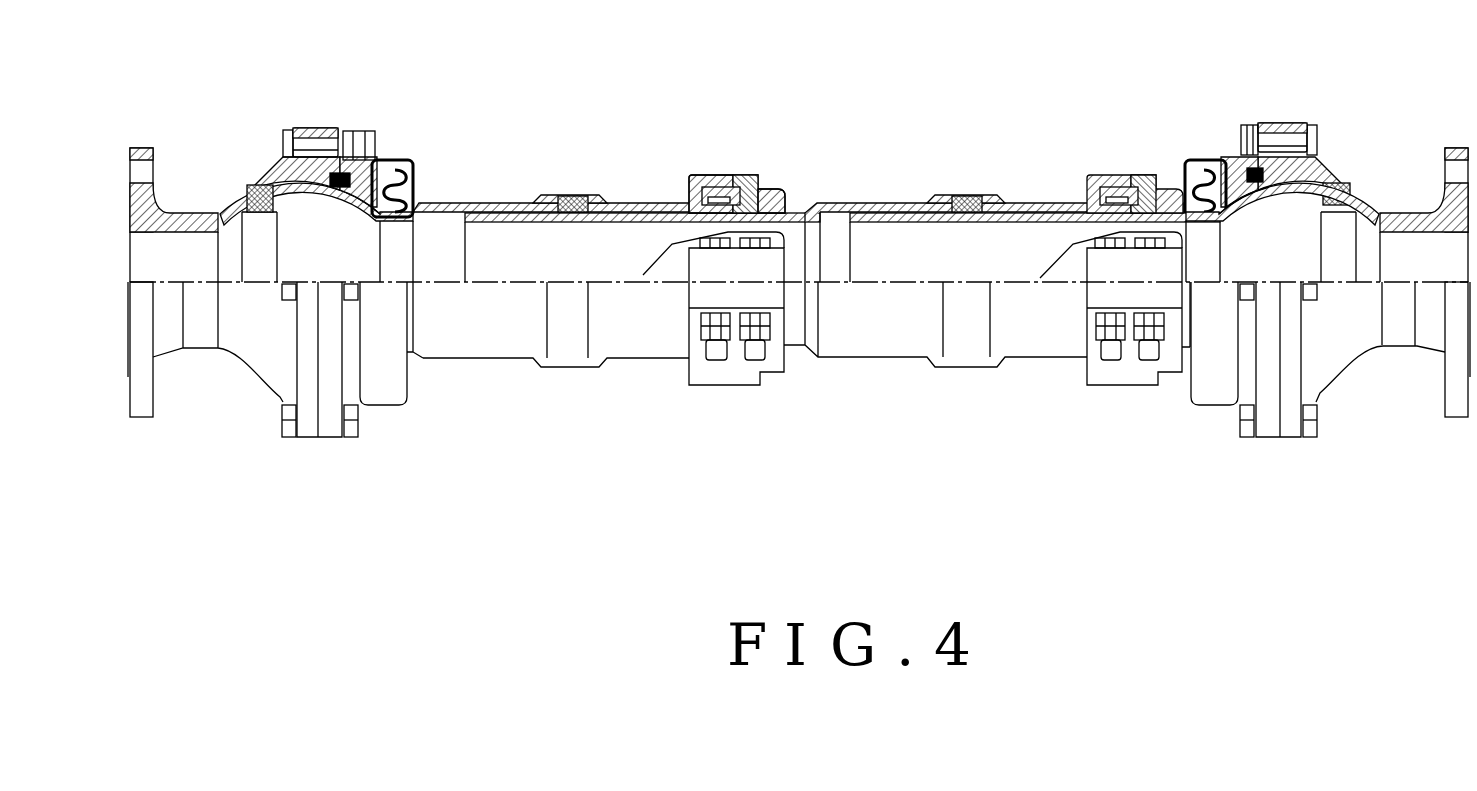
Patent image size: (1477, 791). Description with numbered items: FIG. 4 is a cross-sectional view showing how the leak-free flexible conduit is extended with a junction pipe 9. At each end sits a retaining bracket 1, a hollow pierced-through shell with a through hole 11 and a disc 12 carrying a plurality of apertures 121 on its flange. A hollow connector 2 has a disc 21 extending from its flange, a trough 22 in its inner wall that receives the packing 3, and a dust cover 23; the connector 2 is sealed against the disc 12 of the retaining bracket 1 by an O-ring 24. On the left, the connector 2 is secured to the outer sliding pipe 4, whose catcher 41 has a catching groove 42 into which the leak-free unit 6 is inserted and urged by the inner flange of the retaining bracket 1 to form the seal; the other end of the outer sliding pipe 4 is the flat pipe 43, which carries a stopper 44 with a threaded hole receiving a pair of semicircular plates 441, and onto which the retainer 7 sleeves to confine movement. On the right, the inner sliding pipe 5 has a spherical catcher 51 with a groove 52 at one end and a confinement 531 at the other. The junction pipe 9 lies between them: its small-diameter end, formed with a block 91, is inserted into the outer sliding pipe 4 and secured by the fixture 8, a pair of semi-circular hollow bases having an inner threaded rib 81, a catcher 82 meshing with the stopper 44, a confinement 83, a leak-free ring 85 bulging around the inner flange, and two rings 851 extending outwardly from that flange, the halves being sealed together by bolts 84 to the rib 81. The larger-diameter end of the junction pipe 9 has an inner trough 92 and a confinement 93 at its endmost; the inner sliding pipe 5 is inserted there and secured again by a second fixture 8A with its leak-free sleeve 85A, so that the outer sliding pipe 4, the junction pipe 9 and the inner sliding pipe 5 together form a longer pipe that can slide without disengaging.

The retaining bracket 1 is at (147, 205).
The through hole 11 is at (222, 245).
The disc 12 is at (307, 128).
The apertures 121 is at (313, 127).
The connector 2 is at (1240, 158).
The disc 21 is at (1273, 123).
The trough 22 is at (1253, 127).
The dust cover 23 is at (407, 183).
The O-ring 24 is at (338, 170).
The packing 3 is at (355, 163).
The outer sliding pipe 4 is at (478, 143).
The catcher 41 is at (378, 190).
The catching groove 42 is at (255, 190).
The flat pipe 43 is at (470, 207).
The stopper 44 is at (705, 183).
The semicircular plates 441 is at (722, 183).
The inner sliding pipe 5 is at (1413, 130).
The spherical catcher 51 is at (1330, 177).
The groove 52 is at (1383, 203).
The confinement 531 is at (1037, 207).
The leak-free unit 6 is at (265, 197).
The retainer 7 is at (968, 202).
The fixture 8 is at (756, 254).
The clamp 8A is at (1105, 215).
The inner threaded rib 81 is at (735, 297).
The catcher 82 is at (690, 177).
The confinement 83 is at (783, 197).
The bolts 84 is at (717, 348).
The leak-free ring 85 is at (740, 177).
The gland 85A is at (1147, 173).
The rings 851 is at (768, 213).
The junction pipe 9 is at (850, 202).
The block 91 is at (647, 202).
The trough 92 is at (947, 212).
The confinement 93 is at (1095, 172).